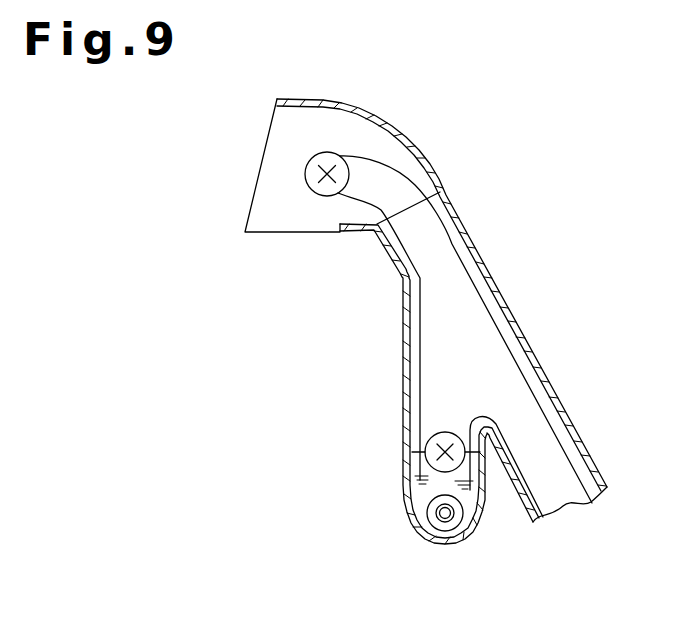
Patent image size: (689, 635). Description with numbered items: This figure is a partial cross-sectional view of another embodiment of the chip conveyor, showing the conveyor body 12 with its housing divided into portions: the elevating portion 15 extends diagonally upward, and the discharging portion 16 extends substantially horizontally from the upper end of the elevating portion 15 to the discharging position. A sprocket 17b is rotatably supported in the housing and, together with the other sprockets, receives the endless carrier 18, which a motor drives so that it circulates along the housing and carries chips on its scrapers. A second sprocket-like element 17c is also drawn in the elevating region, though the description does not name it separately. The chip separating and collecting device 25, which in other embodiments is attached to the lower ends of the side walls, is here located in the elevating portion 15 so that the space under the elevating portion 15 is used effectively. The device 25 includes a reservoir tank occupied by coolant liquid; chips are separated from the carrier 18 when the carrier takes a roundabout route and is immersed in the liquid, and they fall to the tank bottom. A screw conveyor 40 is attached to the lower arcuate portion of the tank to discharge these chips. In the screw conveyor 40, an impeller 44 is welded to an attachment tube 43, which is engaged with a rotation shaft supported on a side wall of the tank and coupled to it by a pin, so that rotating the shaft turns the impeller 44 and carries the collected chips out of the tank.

The conveyor body 12 is at (473, 242).
The elevating portion 15 is at (548, 381).
The discharging portion 16 is at (323, 100).
The sprocket 17b is at (305, 174).
The weld point 17c is at (431, 438).
The endless carrier 18 is at (555, 430).
The chip separating and collecting device 25 is at (402, 501).
The screw conveyor 40 is at (420, 539).
The attachment tube 43 is at (450, 521).
The impeller 44 is at (450, 523).